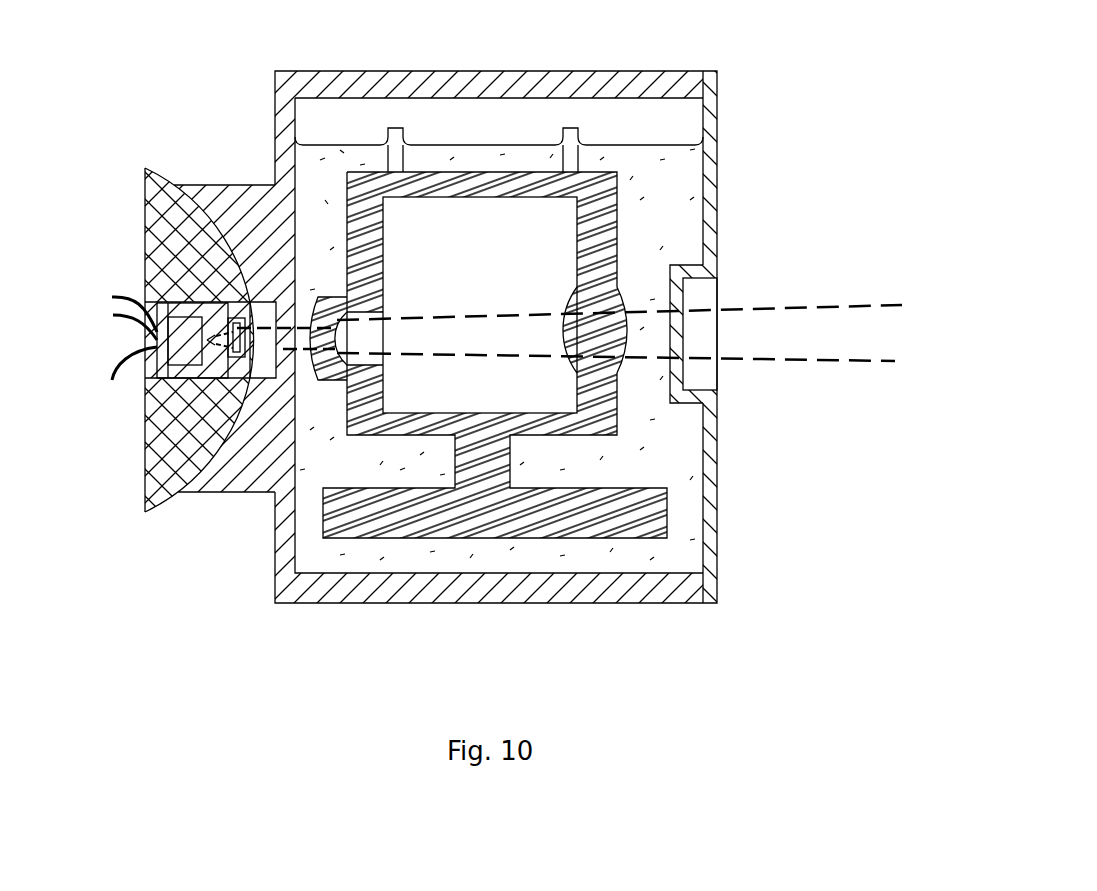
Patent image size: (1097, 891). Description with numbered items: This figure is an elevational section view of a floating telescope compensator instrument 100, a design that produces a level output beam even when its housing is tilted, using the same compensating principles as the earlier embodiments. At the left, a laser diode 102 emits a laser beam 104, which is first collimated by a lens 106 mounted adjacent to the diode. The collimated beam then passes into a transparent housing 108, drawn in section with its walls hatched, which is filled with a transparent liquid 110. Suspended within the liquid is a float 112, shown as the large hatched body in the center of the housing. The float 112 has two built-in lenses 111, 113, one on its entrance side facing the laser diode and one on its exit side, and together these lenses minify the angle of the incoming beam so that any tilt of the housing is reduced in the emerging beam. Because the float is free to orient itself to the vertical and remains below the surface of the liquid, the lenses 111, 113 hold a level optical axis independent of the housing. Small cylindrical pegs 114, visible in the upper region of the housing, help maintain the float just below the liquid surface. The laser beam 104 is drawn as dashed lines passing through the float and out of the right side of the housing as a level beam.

The floating telescope compensator instrument 100 is at (230, 105).
The laser diode 102 is at (157, 337).
The laser beam 104 is at (477, 315).
The lens 106 is at (228, 353).
The transparent housing 108 is at (430, 603).
The transparent liquid 110 is at (495, 555).
The built-in lens 111 is at (318, 380).
The float 112 is at (617, 432).
The built-in lens 113 is at (623, 365).
The small cylindrical pegs 114 is at (403, 130).